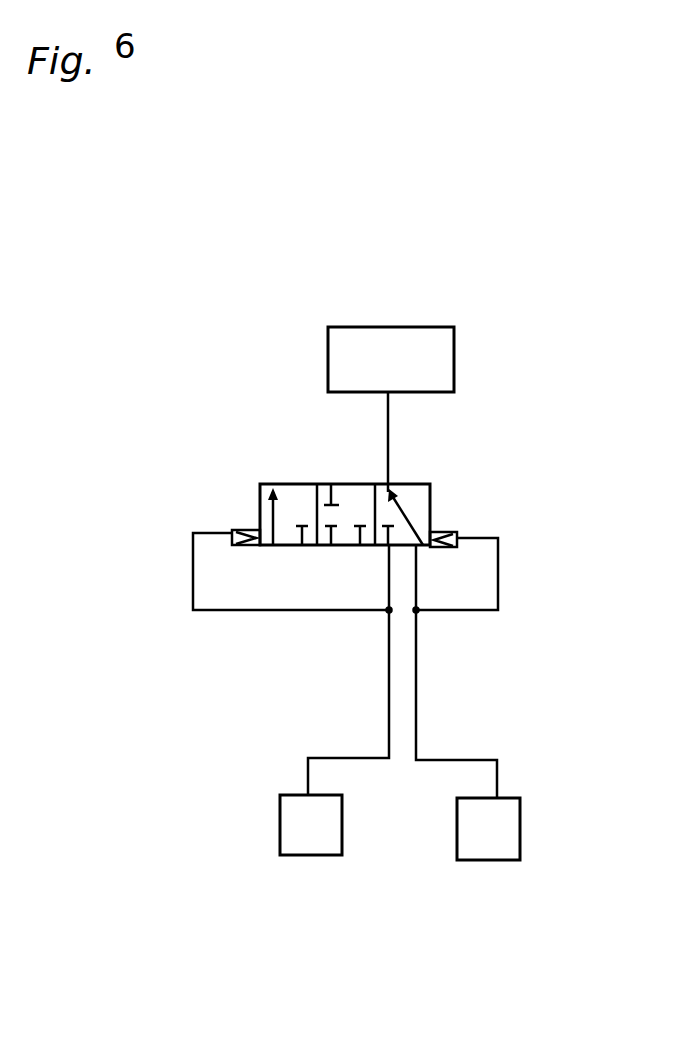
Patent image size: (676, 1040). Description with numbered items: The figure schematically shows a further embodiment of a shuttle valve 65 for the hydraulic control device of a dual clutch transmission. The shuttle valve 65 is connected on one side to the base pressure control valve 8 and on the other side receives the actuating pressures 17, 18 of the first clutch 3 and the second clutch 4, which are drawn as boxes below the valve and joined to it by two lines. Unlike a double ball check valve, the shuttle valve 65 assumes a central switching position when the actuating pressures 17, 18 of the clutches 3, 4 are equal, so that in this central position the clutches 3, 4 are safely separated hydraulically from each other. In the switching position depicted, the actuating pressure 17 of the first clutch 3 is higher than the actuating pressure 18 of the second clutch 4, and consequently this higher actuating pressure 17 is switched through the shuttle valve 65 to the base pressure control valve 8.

The base pressure control valve 8 is at (383, 373).
The shuttle valve 65 is at (444, 503).
The actuating pressure 17 is at (386, 683).
The actuating pressure 18 is at (418, 700).
The first clutch 3 is at (302, 841).
The second clutch 4 is at (479, 845).